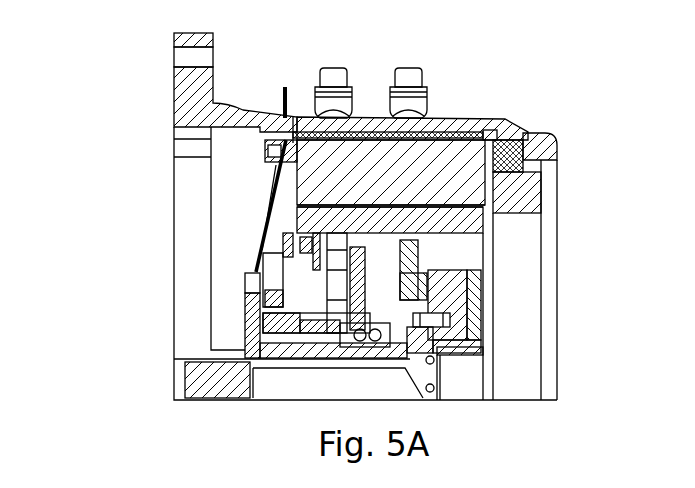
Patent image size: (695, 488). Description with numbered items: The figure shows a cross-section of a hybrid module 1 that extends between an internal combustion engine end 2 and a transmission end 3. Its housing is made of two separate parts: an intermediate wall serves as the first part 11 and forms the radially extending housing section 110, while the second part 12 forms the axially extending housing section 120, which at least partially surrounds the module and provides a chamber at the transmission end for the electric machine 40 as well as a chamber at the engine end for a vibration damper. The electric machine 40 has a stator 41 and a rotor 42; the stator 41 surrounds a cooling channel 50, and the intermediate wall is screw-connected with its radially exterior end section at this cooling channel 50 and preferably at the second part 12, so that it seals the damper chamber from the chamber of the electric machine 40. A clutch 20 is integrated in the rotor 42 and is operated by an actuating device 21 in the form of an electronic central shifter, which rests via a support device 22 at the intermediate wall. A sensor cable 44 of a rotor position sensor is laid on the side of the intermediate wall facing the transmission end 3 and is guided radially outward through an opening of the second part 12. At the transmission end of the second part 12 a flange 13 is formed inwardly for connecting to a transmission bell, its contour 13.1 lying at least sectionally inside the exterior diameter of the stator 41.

The hybrid module 1 is at (450, 76).
The internal combustion engine end 2 is at (112, 72).
The transmission end 3 is at (566, 360).
The first part 11 is at (260, 242).
The second part 12 is at (483, 127).
The flange 13 is at (558, 142).
The contour 13.1 is at (545, 170).
The clutch 20 is at (426, 250).
The actuating device 21 is at (312, 354).
The support device 22 is at (251, 337).
The electric machine 40 is at (263, 236).
The stator 41 is at (313, 185).
The rotor 42 is at (313, 222).
The sensor cable 44 is at (272, 236).
The cooling channel 50 is at (293, 133).
The radially extending housing section 110 is at (232, 262).
The axially extending housing section 120 is at (477, 84).